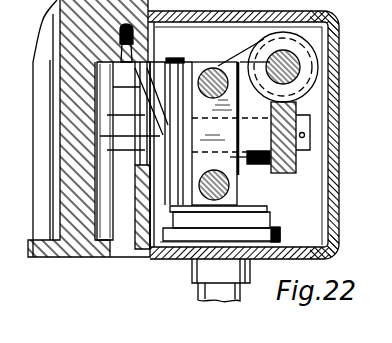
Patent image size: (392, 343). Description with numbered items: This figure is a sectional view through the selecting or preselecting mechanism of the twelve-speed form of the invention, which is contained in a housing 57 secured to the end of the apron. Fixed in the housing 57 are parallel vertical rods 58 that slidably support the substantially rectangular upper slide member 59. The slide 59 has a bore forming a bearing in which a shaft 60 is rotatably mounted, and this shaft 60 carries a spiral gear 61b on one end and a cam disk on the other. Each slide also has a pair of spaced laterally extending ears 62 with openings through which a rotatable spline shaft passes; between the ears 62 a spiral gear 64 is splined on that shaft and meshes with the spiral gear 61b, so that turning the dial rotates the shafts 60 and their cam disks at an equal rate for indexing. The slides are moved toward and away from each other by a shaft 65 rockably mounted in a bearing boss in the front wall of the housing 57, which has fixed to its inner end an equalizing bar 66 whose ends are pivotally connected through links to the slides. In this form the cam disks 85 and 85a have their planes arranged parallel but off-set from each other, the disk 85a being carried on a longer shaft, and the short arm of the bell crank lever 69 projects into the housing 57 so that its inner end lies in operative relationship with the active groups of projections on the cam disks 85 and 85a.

The housing 57 is at (340, 205).
The vertical rods 58 is at (208, 198).
The upper slide member 59 is at (250, 208).
The shaft 60 is at (255, 170).
The spiral gear 61b is at (313, 166).
The ears 62 is at (300, 67).
The spiral gear 64 is at (311, 97).
The shaft 65 is at (217, 66).
The equalizing bar 66 is at (282, 238).
The bell crank lever 69 is at (100, 86).
The cam disk 85 is at (212, 64).
The cam disk 85a is at (194, 58).